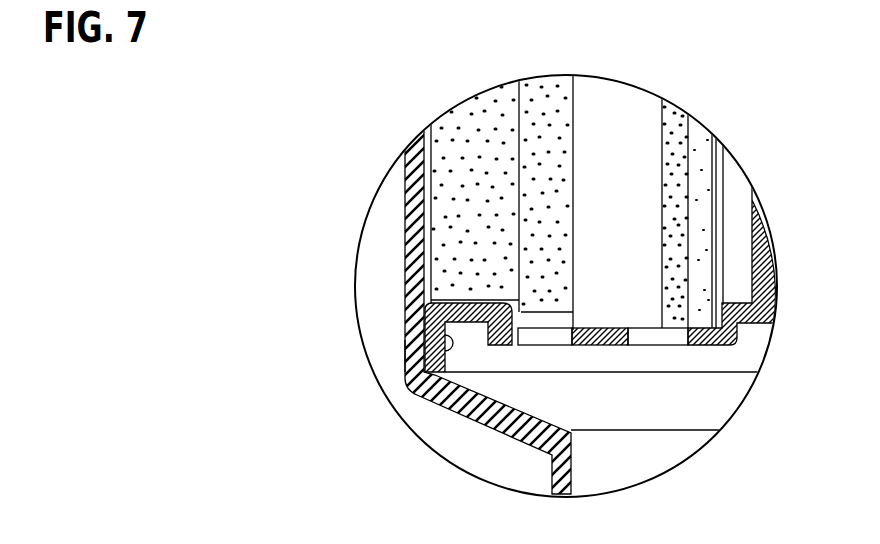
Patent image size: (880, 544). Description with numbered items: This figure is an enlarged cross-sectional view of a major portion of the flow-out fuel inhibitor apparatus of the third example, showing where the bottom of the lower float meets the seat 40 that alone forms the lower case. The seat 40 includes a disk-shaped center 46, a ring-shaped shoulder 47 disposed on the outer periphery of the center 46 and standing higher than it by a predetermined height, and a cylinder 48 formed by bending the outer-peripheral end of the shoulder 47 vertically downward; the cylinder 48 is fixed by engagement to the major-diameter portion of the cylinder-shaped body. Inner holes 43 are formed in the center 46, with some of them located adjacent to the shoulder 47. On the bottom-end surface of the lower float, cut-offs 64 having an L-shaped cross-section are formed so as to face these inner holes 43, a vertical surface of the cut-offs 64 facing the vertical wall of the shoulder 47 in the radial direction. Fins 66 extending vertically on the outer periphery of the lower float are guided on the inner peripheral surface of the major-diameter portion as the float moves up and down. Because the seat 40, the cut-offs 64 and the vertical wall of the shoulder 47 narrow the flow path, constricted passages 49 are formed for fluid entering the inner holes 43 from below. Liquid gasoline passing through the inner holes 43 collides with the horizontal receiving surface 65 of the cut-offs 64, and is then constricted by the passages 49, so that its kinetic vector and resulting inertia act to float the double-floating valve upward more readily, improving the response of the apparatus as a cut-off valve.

The seat 40 is at (715, 352).
The inner holes 43 is at (608, 345).
The center 46 is at (545, 345).
The shoulder 47 is at (458, 303).
The cylinder 48 is at (427, 363).
The constricted passages 49 is at (515, 345).
The cut-offs 64 is at (560, 328).
The horizontal receiving surface 65 is at (533, 313).
The fins 66 is at (477, 115).